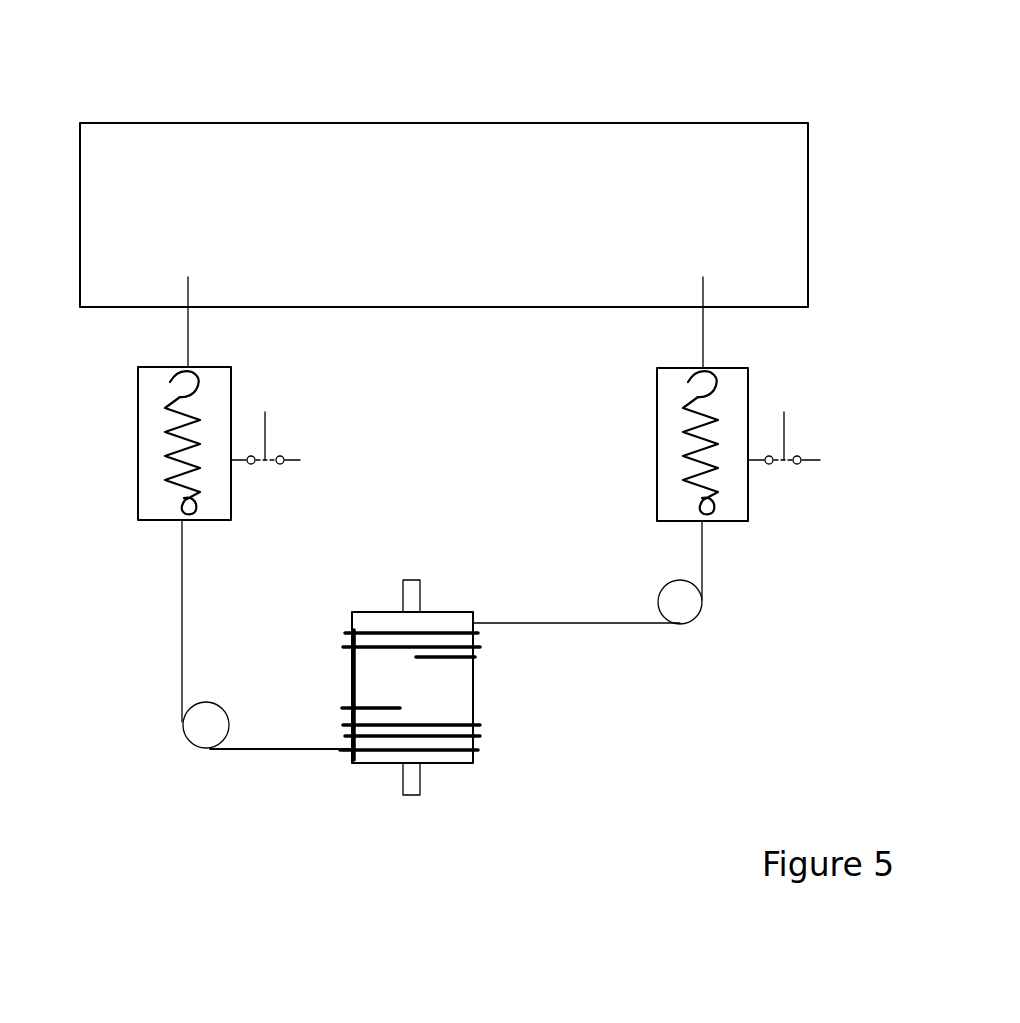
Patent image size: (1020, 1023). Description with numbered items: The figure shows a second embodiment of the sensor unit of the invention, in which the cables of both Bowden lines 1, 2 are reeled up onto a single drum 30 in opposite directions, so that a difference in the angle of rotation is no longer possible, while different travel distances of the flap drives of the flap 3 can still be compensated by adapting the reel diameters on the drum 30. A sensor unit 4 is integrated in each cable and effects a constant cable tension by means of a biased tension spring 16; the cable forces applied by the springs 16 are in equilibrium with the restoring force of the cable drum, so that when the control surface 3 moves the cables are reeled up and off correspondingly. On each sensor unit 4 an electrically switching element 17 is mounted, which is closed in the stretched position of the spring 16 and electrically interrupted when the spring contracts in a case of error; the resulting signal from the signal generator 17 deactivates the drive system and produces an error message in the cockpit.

The Bowden line 1 is at (275, 751).
The Bowden line 2 is at (566, 622).
The flap 3 is at (442, 148).
The sensor unit 4 is at (284, 436).
The tension spring 16 is at (172, 440).
The electrically switching element 17 is at (788, 437).
The drum 30 is at (455, 684).